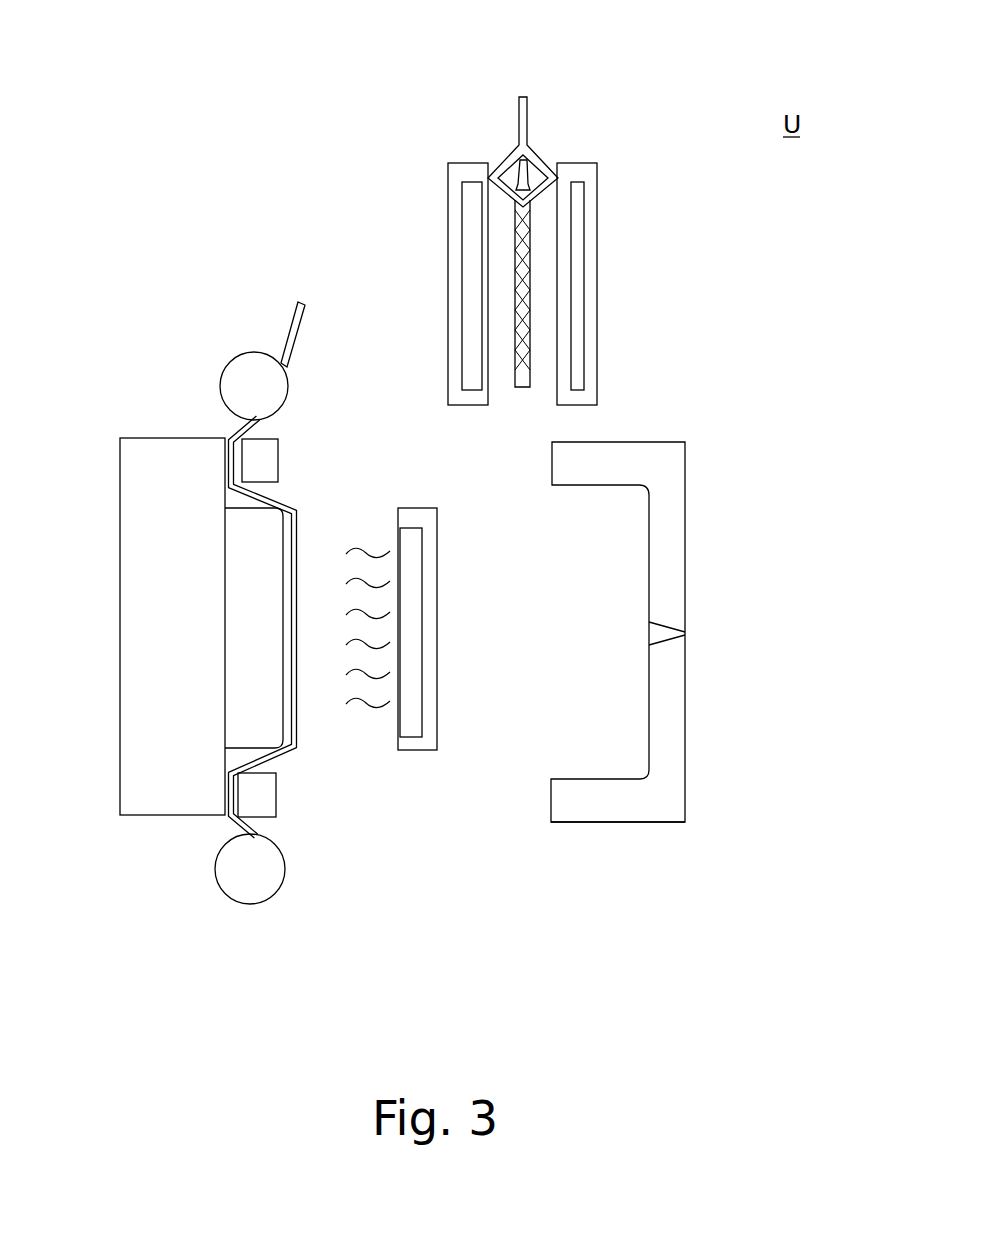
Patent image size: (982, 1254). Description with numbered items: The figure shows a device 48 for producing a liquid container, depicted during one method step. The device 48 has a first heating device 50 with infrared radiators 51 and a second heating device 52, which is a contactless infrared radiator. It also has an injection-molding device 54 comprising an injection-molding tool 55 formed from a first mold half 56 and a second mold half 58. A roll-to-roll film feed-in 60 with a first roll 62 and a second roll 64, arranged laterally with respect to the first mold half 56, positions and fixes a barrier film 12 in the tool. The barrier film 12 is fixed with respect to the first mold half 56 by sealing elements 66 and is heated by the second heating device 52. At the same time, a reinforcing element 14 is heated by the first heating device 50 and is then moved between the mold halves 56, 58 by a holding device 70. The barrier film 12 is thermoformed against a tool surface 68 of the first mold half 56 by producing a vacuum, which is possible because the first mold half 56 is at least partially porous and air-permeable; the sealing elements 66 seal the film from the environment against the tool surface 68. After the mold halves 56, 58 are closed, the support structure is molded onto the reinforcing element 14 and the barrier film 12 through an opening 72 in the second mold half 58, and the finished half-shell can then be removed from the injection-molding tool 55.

The device 48 is at (730, 97).
The first heating device 50 is at (617, 201).
The infrared radiators 51 is at (473, 212).
The holding device 70 is at (527, 116).
The reinforcing element 14 is at (520, 380).
The roll-to-roll film feed-in 60 is at (205, 330).
The first roll 62 is at (238, 388).
The barrier film 12 is at (295, 332).
The second roll 64 is at (243, 888).
The sealing elements 66 is at (265, 462).
The first mold half 56 is at (153, 793).
The tool surface 68 is at (281, 585).
The second heating device 52 is at (456, 750).
The injection-molding device 54 is at (675, 876).
The second mold half 58 is at (667, 782).
The injection-molding tool 55 is at (577, 830).
The opening 72 is at (668, 630).